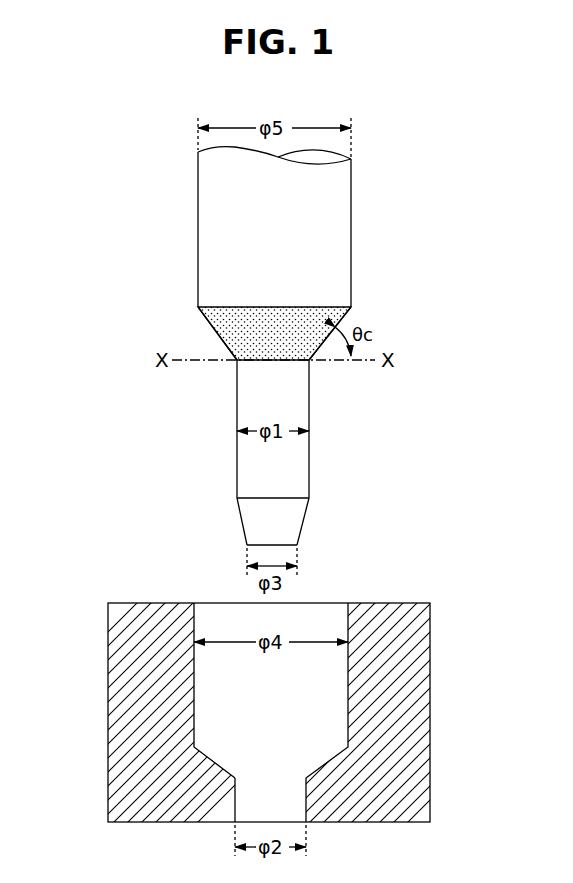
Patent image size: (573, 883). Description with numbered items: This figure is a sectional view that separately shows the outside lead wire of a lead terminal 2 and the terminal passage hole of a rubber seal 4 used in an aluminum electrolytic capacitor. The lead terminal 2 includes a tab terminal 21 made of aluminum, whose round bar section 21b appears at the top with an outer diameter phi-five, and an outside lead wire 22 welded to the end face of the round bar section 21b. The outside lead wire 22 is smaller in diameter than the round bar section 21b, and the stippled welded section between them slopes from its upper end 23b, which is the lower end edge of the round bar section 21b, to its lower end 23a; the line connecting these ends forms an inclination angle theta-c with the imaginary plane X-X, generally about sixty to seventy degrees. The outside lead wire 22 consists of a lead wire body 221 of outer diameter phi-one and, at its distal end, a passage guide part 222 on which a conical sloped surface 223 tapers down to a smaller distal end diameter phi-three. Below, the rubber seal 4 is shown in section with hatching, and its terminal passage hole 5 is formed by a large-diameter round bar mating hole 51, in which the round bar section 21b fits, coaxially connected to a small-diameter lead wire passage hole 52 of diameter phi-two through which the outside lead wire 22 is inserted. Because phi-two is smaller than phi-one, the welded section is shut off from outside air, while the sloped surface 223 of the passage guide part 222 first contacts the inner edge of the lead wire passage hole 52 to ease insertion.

The lead terminal 2 is at (286, 346).
The tab terminal 21 is at (276, 227).
The round bar section 21b is at (352, 231).
The lower end of the welded section 23a is at (219, 337).
The upper end of the welded section 23b is at (197, 310).
The outside lead wire 22 is at (275, 452).
The lead wire body 221 is at (237, 449).
The passage guide part 222 is at (257, 520).
The sloped surface 223 is at (303, 523).
The rubber seal 4 is at (301, 696).
The terminal passage hole 5 is at (354, 712).
The round bar mating hole 51 is at (350, 735).
The lead wire passage hole 52 is at (308, 805).